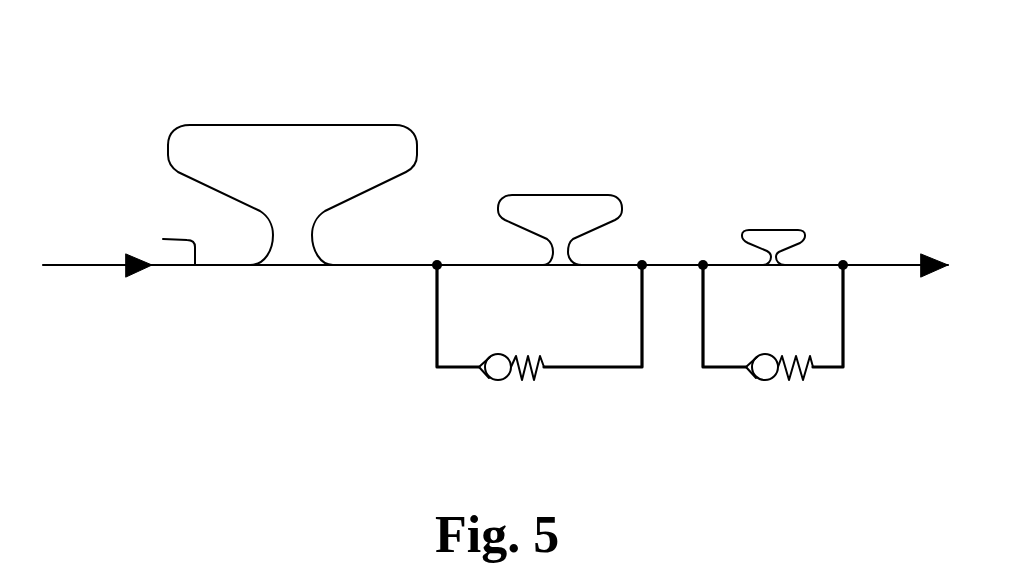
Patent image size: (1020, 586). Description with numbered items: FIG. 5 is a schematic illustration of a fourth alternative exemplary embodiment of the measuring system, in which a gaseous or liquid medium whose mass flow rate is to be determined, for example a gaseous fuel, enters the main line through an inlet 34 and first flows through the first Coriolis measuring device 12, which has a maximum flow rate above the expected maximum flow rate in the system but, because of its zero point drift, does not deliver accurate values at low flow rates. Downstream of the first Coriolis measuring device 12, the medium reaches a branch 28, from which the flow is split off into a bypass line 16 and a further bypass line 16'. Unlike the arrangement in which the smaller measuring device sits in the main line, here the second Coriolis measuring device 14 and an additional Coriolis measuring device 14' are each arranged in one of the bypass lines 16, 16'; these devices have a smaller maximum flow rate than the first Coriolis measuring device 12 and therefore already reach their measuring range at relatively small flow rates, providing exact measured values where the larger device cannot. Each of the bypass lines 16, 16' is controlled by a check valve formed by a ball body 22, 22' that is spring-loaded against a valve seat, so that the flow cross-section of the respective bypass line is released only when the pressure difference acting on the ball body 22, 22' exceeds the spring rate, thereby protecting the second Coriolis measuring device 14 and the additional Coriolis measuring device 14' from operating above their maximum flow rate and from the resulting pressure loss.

The first Coriolis measuring device 12 is at (277, 125).
The inlet 34 is at (163, 239).
The branch 28 is at (437, 262).
The second Coriolis measuring device 14 is at (560, 181).
The additional Coriolis measuring device 14' is at (758, 199).
The bypass line 16 is at (487, 330).
The ball body 22 is at (507, 399).
The bypass line 16' is at (834, 330).
The ball body 22' is at (775, 397).